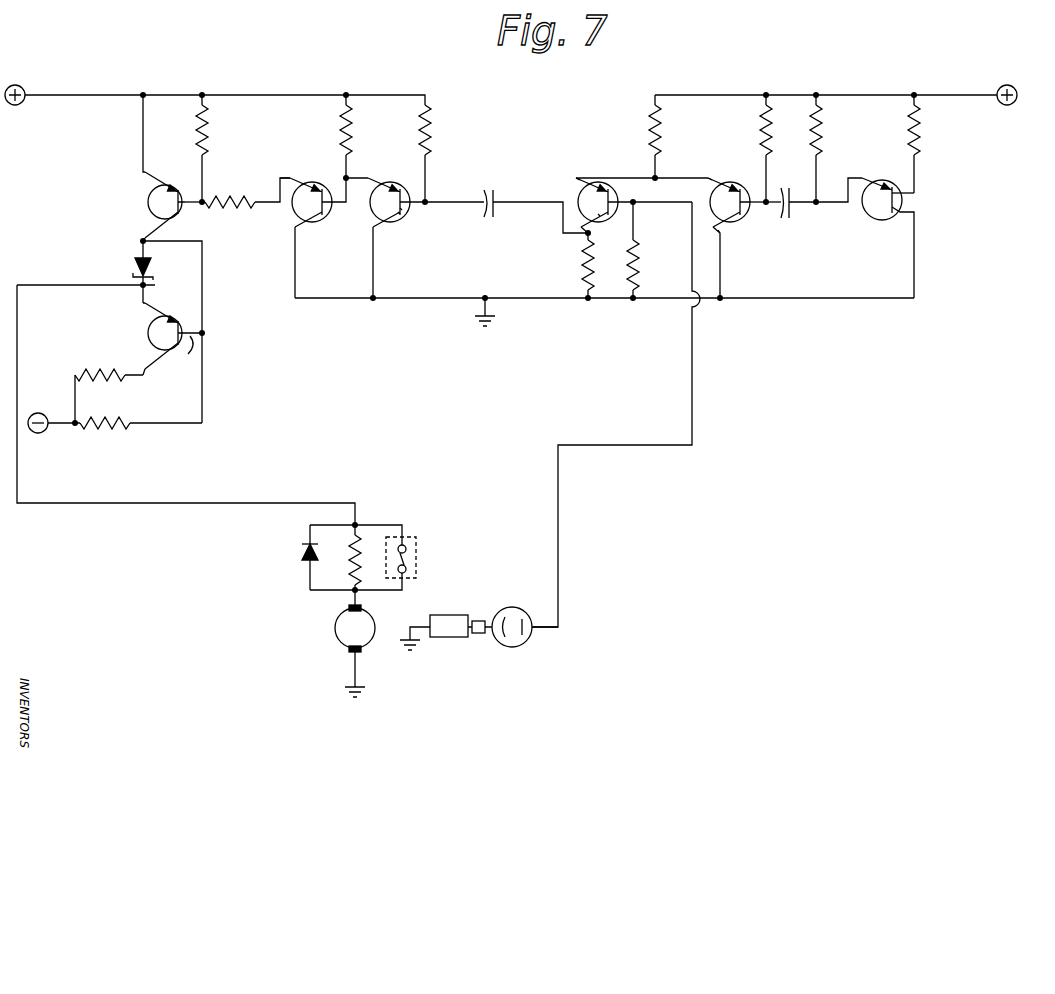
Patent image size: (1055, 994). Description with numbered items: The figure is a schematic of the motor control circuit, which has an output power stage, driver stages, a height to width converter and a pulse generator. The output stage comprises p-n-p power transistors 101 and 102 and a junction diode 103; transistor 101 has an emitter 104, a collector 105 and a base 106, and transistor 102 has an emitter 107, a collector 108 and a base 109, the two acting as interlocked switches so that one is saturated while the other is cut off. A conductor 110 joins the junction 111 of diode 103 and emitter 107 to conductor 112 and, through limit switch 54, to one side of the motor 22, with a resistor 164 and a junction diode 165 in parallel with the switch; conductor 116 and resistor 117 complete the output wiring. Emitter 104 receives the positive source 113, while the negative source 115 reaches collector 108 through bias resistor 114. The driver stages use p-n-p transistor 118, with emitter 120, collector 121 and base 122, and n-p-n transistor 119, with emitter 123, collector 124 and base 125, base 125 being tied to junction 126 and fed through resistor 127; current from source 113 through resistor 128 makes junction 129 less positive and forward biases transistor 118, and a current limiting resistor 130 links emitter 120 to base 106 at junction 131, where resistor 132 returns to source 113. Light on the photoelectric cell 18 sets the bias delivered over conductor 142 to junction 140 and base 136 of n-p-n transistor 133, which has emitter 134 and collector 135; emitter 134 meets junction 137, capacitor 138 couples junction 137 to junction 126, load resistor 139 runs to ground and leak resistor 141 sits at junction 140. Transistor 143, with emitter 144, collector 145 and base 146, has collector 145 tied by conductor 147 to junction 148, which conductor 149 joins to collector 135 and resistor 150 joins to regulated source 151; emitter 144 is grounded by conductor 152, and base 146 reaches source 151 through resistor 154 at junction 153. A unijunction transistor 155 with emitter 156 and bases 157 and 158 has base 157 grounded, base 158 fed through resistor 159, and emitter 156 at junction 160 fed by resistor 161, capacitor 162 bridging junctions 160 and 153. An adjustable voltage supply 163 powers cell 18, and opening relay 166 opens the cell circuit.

The source of positive D.-C. potential 113 is at (23, 88).
The source of regulated positive D.-C. potential 151 is at (1006, 106).
The source of negative D.-C. potential 115 is at (42, 433).
The resistor 132 is at (215, 130).
The resistor 128 is at (350, 130).
The resistor 127 is at (433, 130).
The resistor 150 is at (660, 138).
The resistor 154 is at (762, 125).
The resistor 161 is at (822, 135).
The resistor 159 is at (920, 135).
The power transistor 101 is at (148, 203).
The emitter electrode 104 is at (150, 187).
The collector electrode 105 is at (152, 215).
The base electrode 106 is at (190, 212).
The junction 131 is at (205, 202).
The current limiting resistor 130 is at (240, 208).
The conductor 116 is at (204, 295).
The junction diode 103 is at (135, 268).
The junction 111 is at (148, 287).
The conductor 110 is at (52, 285).
The power transistor 102 is at (148, 336).
The emitter electrode 107 is at (150, 320).
The collector electrode 108 is at (152, 348).
The base electrode 109 is at (180, 358).
The bias resistor 114 is at (120, 378).
The resistor 117 is at (118, 428).
The emitter electrode 120 is at (322, 182).
The p-n-p transistor 118 is at (300, 185).
The base electrode 122 is at (330, 208).
The collector electrode 121 is at (305, 228).
The junction 129 is at (348, 180).
The collector electrode 124 is at (392, 183).
The junction 126 is at (430, 200).
The base electrode 125 is at (405, 208).
The n-p-n transistor 119 is at (400, 218).
The emitter electrode 123 is at (402, 225).
The capacitor 138 is at (497, 192).
The n-p-n transistor 133 is at (578, 200).
The collector electrode 135 is at (590, 188).
The conductor 149 is at (628, 177).
The junction 148 is at (660, 180).
The base electrode 136 is at (622, 204).
The emitter electrode 134 is at (598, 222).
The junction 137 is at (585, 234).
The load resistor 139 is at (582, 260).
The junction 140 is at (636, 205).
The leak resistor 141 is at (638, 262).
The conductor 142 is at (694, 380).
The collector electrode 145 is at (712, 200).
The conductor 147 is at (715, 182).
The base electrode 146 is at (728, 222).
The n-p-n transistor 143 is at (722, 228).
The emitter electrode 144 is at (720, 236).
The conductor 152 is at (722, 285).
The junction 153 is at (778, 195).
The capacitor 162 is at (790, 218).
The junction 160 is at (820, 195).
The unijunction transistor 155 is at (893, 220).
The emitter electrode 156 is at (880, 185).
The second base electrode 158 is at (905, 190).
The first base electrode 157 is at (905, 210).
The conductor 112 is at (372, 528).
The limit switch 54 is at (417, 553).
The junction diode 165 is at (303, 560).
The resistor 164 is at (348, 565).
The motor 22 is at (335, 628).
The adjustable voltage supply 163 is at (452, 614).
The relay 166 is at (474, 636).
The photoelectric cell 18 is at (520, 645).